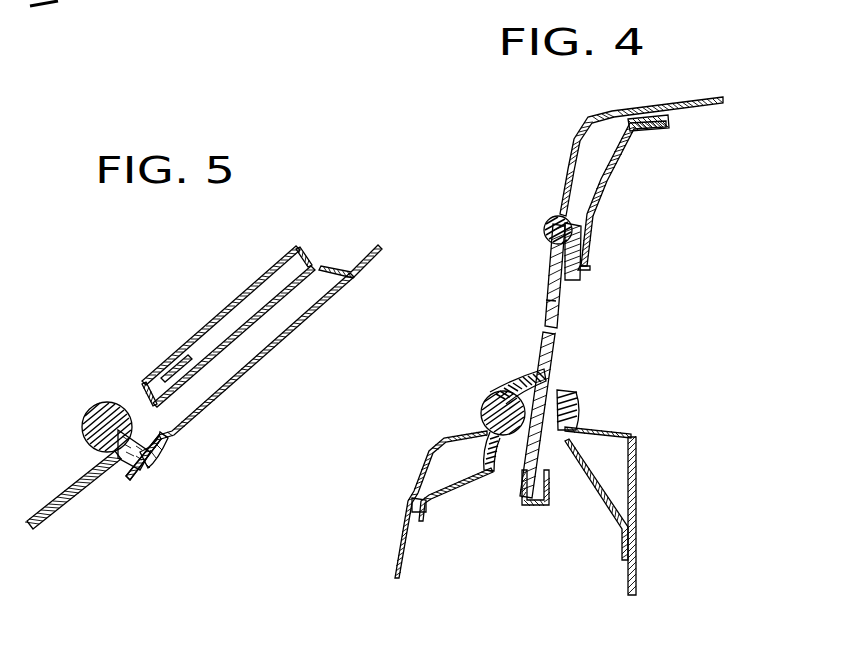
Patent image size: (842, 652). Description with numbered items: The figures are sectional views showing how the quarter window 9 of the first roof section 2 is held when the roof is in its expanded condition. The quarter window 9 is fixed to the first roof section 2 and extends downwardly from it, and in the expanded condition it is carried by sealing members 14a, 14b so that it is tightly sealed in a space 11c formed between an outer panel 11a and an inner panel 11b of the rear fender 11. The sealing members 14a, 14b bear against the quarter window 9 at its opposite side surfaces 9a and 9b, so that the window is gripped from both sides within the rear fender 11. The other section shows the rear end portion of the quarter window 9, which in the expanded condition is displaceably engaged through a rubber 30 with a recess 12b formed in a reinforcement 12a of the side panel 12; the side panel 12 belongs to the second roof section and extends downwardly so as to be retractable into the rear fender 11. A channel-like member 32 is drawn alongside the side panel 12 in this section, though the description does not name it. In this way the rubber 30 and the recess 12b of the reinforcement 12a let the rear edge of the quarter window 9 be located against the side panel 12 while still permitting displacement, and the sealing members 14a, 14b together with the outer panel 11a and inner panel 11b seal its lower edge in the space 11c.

In FIG. 4, the first roof section 2 is at (592, 124).
In FIG. 4, the quarter window 9 is at (558, 347).
In FIG. 5, the quarter window 9 is at (57, 508).
In FIG. 4, the side surface of quarter window 9a is at (546, 300).
In FIG. 4, the side surface of quarter window 9b is at (558, 308).
In FIG. 4, the rear fender 11 is at (640, 440).
In FIG. 4, the outer panel 11a is at (428, 458).
In FIG. 4, the inner panel 11b is at (638, 525).
In FIG. 4, the space 11c is at (533, 520).
In FIG. 5, the side panel 12 is at (230, 388).
In FIG. 5, the reinforcement 12a is at (330, 268).
In FIG. 5, the recess 12b is at (114, 480).
In FIG. 4, the sealing member 14a is at (503, 398).
In FIG. 4, the sealing member 14b is at (580, 402).
In FIG. 5, the rubber 30 is at (110, 456).
In FIG. 5, the channel member 32 is at (270, 282).